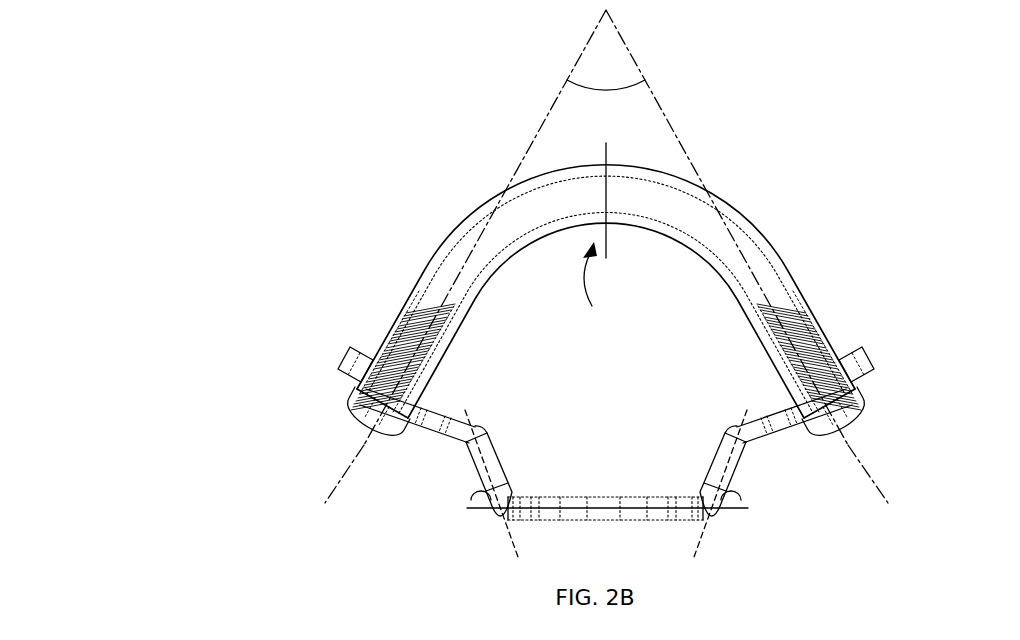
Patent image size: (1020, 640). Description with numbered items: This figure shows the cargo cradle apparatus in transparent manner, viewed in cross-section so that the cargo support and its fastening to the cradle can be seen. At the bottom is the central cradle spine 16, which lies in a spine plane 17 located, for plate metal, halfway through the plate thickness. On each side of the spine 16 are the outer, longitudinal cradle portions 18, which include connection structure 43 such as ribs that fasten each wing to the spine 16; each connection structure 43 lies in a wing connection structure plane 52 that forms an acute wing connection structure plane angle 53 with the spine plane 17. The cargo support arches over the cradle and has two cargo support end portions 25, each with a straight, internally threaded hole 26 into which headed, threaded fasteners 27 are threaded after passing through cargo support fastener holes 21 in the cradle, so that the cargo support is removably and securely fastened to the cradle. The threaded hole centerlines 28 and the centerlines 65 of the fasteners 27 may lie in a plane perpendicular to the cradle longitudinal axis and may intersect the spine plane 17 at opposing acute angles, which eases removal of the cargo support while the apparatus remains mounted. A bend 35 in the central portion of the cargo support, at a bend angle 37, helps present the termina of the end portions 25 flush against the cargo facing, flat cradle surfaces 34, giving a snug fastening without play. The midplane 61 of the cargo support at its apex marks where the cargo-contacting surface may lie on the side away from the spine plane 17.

The spine 16 is at (557, 520).
The spine plane 17 is at (733, 513).
The outer, longitudinal cradle portions 18 is at (476, 423).
The cargo support fastener holes 21 is at (372, 350).
The cargo support end portions 25 is at (393, 347).
The straight, internally threaded hole 26 is at (440, 327).
The fasteners 27 is at (350, 404).
The threaded hole centerlines 28 is at (328, 493).
The cargo facing, flat cradle surfaces 34 is at (460, 420).
The bend 35 is at (598, 283).
The bend angle 37 is at (604, 90).
The connection structure 43 is at (500, 469).
The wing connection structure plane 52 is at (508, 553).
The acute wing connection structure plane angle 53 is at (480, 493).
The midplane 61 is at (607, 148).
The centerlines of the headed, threaded fasteners 65 is at (358, 436).